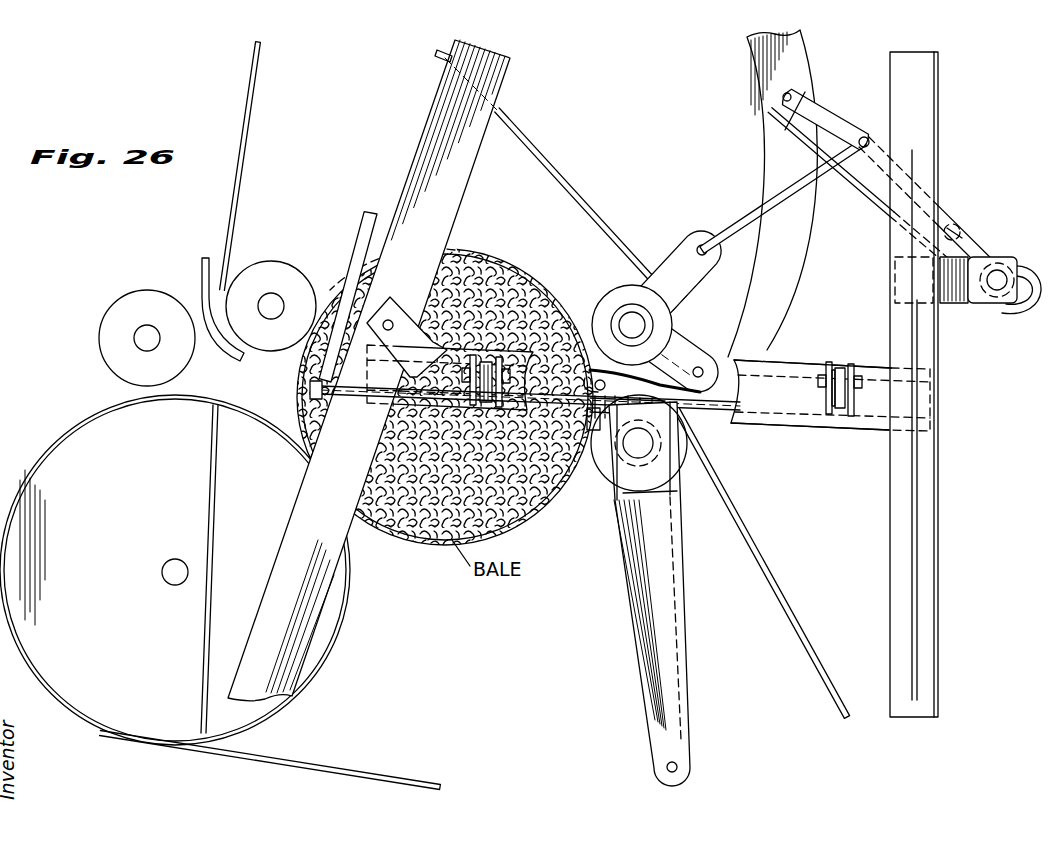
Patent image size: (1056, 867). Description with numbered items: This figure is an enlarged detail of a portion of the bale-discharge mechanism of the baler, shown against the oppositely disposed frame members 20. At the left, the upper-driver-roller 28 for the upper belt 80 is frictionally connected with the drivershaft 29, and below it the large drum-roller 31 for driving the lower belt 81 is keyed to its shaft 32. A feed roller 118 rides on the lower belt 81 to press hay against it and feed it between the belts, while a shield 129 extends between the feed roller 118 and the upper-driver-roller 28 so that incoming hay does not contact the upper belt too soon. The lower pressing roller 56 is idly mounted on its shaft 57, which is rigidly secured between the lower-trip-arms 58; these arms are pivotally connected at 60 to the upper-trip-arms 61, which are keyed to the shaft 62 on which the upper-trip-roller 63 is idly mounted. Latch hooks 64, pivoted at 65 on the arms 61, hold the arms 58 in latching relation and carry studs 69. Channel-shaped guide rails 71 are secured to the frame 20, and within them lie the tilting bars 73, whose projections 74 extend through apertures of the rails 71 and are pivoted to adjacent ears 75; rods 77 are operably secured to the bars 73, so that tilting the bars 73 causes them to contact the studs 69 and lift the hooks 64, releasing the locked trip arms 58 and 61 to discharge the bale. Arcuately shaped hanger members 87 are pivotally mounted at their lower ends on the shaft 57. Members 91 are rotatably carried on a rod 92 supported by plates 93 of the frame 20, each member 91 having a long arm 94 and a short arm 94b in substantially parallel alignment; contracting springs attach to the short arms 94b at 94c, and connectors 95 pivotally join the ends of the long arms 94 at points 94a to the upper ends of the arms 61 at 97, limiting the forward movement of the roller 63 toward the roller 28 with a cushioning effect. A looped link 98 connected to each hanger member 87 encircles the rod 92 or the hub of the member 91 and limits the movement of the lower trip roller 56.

The frame members 20 is at (302, 512).
The upper-driver-roller 28 is at (280, 268).
The drivershaft 29 is at (282, 298).
The large drum-roller 31 is at (340, 620).
The shaft 32 is at (168, 560).
The lower pressing roller 56 is at (688, 452).
The shaft 57 is at (630, 445).
The lower-trip-arms 58 is at (628, 478).
The pivot 60 is at (683, 766).
The upper-trip-arms 61 is at (695, 272).
The shaft 62 is at (628, 318).
The upper-trip-roller 63 is at (617, 283).
The latch hooks 64 is at (703, 368).
The hook pivot 65 is at (748, 362).
The studs 69 is at (578, 372).
The guide rails 71 is at (472, 345).
The tilting bars 73 is at (565, 402).
The projections 74 is at (855, 356).
The ears 75 is at (830, 365).
The rods 77 is at (365, 217).
The upper belt 80 is at (238, 190).
The lower belt 81 is at (330, 766).
The hanger members 87 is at (775, 163).
The members 91 is at (882, 135).
The rod 92 is at (998, 267).
The plates 93 is at (968, 300).
The long arm 94 is at (828, 135).
The pivot points 94a is at (870, 142).
The short arm 94b is at (948, 225).
The spring attachment point 94c is at (960, 232).
The connectors 95 is at (745, 218).
The pivot 97 is at (698, 246).
The looped link 98 is at (870, 185).
The feed roller 118 is at (103, 333).
The shield 129 is at (200, 262).